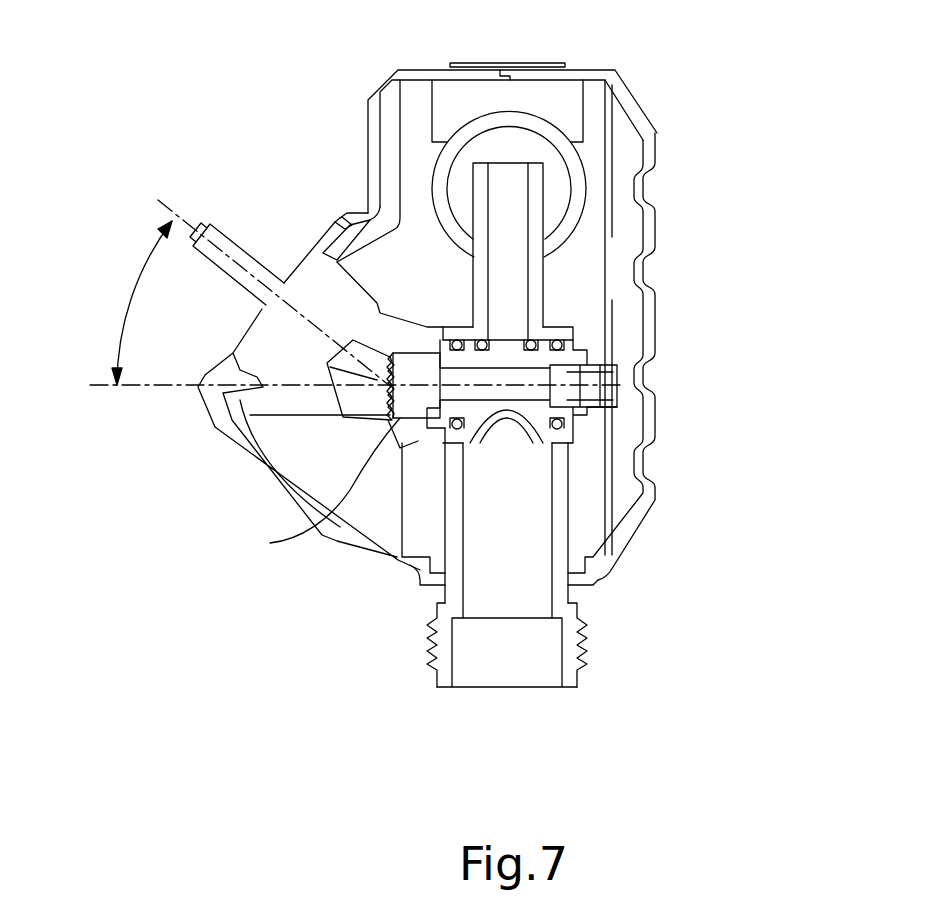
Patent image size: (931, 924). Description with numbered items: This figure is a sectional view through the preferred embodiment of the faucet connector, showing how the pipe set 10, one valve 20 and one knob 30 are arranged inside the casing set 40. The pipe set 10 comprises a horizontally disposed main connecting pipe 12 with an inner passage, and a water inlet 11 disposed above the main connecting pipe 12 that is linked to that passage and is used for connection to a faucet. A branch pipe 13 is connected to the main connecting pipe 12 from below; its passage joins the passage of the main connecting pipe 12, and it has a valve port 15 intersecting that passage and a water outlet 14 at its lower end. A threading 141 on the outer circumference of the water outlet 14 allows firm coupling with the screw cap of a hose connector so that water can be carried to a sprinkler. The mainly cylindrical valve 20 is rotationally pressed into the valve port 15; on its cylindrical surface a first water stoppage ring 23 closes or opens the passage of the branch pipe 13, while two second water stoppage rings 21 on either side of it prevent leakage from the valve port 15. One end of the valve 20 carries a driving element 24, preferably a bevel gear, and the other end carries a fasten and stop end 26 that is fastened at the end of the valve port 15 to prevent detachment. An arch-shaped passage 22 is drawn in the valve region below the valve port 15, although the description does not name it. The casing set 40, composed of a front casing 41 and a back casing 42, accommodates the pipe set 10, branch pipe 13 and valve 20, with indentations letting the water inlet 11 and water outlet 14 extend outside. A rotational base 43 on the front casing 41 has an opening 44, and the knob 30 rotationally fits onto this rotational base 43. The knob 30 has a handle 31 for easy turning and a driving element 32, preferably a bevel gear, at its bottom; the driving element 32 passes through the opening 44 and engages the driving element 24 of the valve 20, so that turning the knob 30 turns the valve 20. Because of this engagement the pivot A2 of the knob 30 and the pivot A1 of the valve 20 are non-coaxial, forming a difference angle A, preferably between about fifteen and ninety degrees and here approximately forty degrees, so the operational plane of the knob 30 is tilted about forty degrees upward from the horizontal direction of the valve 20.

The pipe set 10 is at (592, 158).
The water inlet 11 is at (500, 62).
The main connecting pipe 12 is at (584, 192).
The branch pipe 13 is at (563, 492).
The water outlet 14 is at (521, 660).
The threading 141 is at (583, 620).
The valve port 15 is at (573, 417).
The valve 20 is at (625, 352).
The second water stoppage ring 21 is at (455, 340).
The flow passage 22 is at (532, 416).
The first water stoppage ring 23 is at (536, 341).
The driving element 24 is at (272, 543).
The fasten and stop end 26 is at (584, 413).
The knob 30 is at (357, 339).
The handle 31 is at (244, 242).
The driving element 32 is at (258, 480).
The casing set 40 is at (640, 82).
The front casing 41 is at (386, 96).
The back casing 42 is at (652, 155).
The rotational base 43 is at (338, 212).
The opening 44 is at (335, 258).
The difference angle A is at (136, 303).
The pivot of the valve A1 is at (163, 388).
The pivot of the knob A2 is at (162, 203).